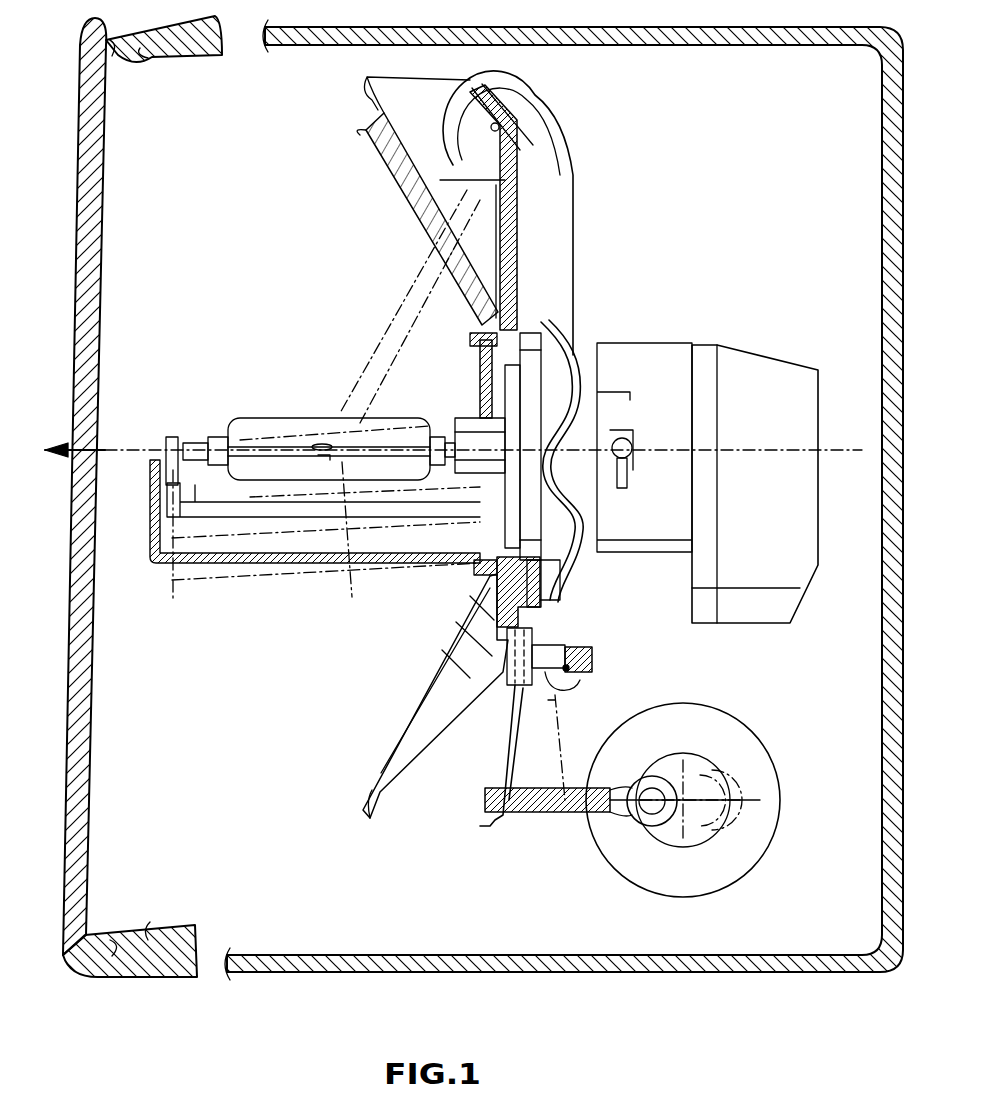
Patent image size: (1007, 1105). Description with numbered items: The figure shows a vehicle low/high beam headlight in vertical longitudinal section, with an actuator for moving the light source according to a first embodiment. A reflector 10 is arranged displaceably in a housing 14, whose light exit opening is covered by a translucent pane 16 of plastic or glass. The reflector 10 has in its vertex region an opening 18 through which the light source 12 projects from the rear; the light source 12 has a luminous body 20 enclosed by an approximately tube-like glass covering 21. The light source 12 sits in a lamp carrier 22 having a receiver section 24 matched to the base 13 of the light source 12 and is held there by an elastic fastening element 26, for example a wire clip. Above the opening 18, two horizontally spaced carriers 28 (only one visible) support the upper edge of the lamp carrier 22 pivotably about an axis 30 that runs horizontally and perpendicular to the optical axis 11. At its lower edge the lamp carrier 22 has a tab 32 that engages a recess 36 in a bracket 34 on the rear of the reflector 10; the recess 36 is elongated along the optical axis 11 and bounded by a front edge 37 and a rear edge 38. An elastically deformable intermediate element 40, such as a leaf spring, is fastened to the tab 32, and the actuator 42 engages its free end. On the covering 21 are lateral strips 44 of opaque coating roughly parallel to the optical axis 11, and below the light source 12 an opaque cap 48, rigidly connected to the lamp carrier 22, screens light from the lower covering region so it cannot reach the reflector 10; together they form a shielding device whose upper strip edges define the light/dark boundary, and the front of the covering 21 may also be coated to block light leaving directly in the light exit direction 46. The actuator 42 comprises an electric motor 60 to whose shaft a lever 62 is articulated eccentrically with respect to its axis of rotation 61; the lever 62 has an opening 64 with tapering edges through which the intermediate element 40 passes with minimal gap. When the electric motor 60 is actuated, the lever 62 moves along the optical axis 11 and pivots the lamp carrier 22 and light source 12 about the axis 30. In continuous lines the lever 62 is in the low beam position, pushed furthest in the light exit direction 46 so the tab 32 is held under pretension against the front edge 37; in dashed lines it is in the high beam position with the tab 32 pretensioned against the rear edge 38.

The reflector 10 is at (372, 130).
The optical axis 11 is at (856, 452).
The light source 12 is at (592, 322).
The base 13 is at (530, 345).
The housing 14 is at (782, 35).
The translucent pane 16 is at (104, 163).
The opening 18 is at (548, 262).
The luminous body 20 is at (322, 445).
The covering 21 is at (270, 418).
The lamp carrier 22 is at (552, 176).
The receiver section 24 is at (552, 305).
The elastic fastening element 26 is at (602, 372).
The carriers 28 is at (450, 92).
The axis 30 is at (522, 102).
The tab 32 is at (548, 688).
The bracket 34 is at (595, 650).
The recess 36 is at (553, 652).
The front edge 37 is at (511, 684).
The rear edge 38 is at (570, 670).
The intermediate element 40 is at (508, 756).
The actuator 42 is at (764, 703).
The strips 44 is at (246, 442).
The light exit direction 46 is at (108, 447).
The opaque cap 48 is at (258, 565).
The electric motor 60 is at (751, 773).
The axis of rotation 61 is at (776, 790).
The lever 62 is at (594, 826).
The opening 64 is at (518, 813).